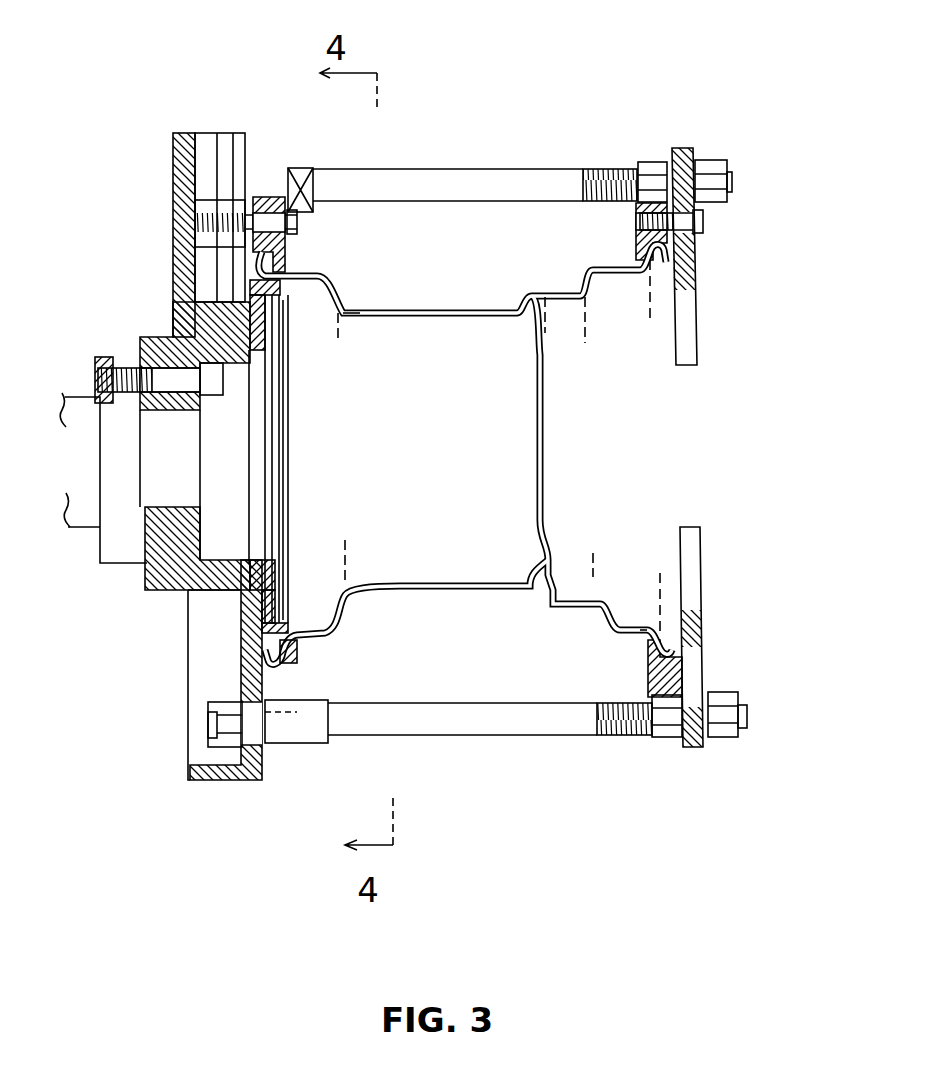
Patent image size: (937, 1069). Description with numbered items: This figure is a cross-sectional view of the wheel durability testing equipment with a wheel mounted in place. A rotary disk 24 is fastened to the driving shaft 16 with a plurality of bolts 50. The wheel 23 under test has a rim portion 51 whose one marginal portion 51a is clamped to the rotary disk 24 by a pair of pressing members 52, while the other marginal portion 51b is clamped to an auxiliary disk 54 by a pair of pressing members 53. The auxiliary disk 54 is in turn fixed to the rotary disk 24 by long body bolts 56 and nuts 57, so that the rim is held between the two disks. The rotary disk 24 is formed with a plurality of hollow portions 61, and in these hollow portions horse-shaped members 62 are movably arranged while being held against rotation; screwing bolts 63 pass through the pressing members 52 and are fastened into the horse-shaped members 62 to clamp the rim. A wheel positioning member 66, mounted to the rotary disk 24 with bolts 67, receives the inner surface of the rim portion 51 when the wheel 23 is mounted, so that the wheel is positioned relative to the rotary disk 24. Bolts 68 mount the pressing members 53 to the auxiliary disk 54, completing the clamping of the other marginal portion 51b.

The driving shaft 16 is at (112, 355).
The wheel 23 is at (443, 302).
The rotary disk 24 is at (166, 600).
The bolts 50 is at (160, 337).
The rim portion 51 is at (318, 276).
The one marginal portion 51a is at (297, 657).
The other marginal portion 51b is at (650, 647).
The pressing members 52 is at (268, 197).
The pressing members 53 is at (636, 238).
The auxiliary disk 54 is at (700, 336).
The long body bolts 56 is at (505, 168).
The nuts 57 is at (652, 162).
The hollow portions 61 is at (200, 133).
The horse-shaped members 62 is at (222, 133).
The screwing bolts 63 is at (320, 212).
The wheel positioning member 66 is at (286, 453).
The bolts 67 is at (280, 340).
The bolts 68 is at (703, 222).